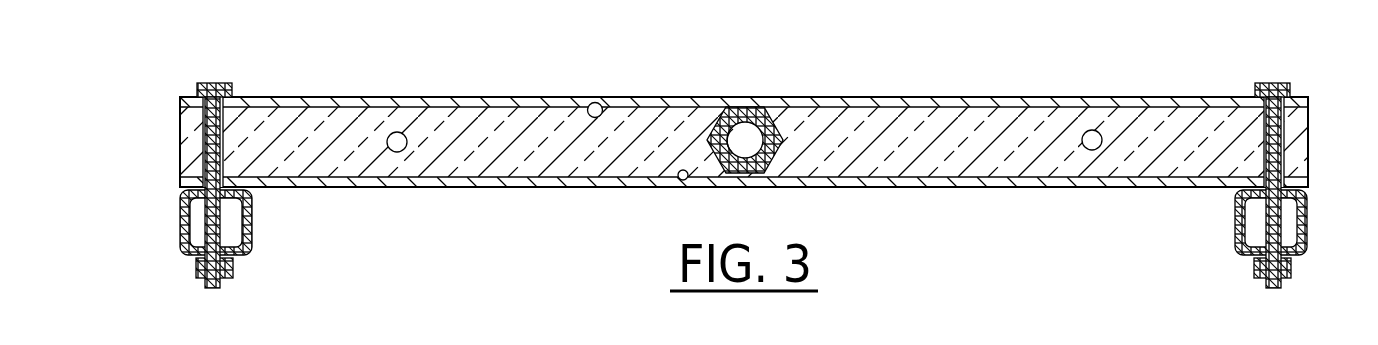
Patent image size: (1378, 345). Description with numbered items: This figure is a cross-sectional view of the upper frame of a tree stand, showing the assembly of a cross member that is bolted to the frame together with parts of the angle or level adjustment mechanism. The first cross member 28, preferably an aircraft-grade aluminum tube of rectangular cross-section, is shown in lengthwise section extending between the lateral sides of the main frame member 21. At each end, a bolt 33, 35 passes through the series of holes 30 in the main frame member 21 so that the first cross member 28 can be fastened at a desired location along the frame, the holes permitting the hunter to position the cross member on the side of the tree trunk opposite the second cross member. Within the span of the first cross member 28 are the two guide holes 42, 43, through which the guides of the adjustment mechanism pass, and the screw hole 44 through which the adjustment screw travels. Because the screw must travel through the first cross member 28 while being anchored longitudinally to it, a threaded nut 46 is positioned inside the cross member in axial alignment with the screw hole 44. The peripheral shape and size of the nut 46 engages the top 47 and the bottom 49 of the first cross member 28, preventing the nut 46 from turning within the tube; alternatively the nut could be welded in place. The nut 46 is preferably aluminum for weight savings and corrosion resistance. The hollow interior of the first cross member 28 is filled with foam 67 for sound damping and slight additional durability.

The main frame member 21 is at (180, 222).
The first cross member 28 is at (877, 96).
The holes 30 is at (218, 238).
The bolt 33 is at (207, 83).
The bolt 35 is at (1271, 83).
The guide hole 42 is at (396, 133).
The guide hole 43 is at (1093, 134).
The screw hole 44 is at (738, 128).
The threaded nut 46 is at (770, 122).
The top of the first cross member 47 is at (592, 103).
The bottom of the first cross member 49 is at (682, 180).
The foam 67 is at (1012, 122).